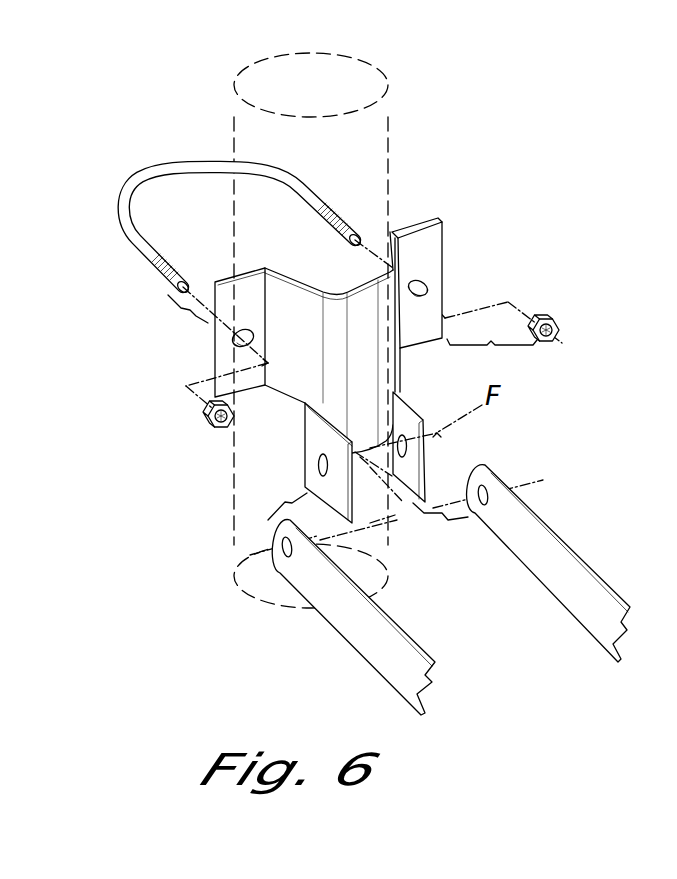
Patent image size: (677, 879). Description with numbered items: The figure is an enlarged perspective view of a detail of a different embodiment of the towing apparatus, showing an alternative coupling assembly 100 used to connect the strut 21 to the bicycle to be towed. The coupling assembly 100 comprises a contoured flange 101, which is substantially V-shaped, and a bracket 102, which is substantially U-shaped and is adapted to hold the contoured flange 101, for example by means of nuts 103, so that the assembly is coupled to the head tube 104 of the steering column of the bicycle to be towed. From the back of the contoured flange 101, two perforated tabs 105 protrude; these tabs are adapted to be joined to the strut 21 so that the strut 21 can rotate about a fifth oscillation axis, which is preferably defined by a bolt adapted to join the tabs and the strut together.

The coupling assembly 100 is at (480, 198).
The contoured flange 101 is at (430, 258).
The bracket 102 is at (173, 170).
The nuts 103 is at (202, 427).
The head tube 104 is at (390, 100).
The perforated tabs 105 is at (305, 477).
The strut 21 is at (592, 559).